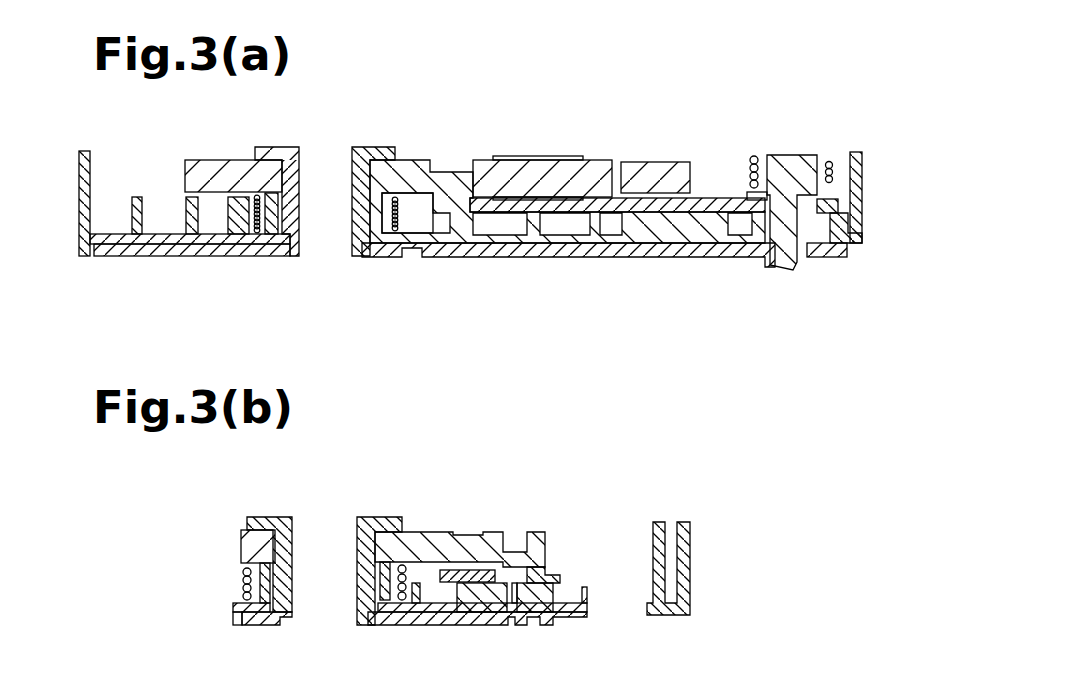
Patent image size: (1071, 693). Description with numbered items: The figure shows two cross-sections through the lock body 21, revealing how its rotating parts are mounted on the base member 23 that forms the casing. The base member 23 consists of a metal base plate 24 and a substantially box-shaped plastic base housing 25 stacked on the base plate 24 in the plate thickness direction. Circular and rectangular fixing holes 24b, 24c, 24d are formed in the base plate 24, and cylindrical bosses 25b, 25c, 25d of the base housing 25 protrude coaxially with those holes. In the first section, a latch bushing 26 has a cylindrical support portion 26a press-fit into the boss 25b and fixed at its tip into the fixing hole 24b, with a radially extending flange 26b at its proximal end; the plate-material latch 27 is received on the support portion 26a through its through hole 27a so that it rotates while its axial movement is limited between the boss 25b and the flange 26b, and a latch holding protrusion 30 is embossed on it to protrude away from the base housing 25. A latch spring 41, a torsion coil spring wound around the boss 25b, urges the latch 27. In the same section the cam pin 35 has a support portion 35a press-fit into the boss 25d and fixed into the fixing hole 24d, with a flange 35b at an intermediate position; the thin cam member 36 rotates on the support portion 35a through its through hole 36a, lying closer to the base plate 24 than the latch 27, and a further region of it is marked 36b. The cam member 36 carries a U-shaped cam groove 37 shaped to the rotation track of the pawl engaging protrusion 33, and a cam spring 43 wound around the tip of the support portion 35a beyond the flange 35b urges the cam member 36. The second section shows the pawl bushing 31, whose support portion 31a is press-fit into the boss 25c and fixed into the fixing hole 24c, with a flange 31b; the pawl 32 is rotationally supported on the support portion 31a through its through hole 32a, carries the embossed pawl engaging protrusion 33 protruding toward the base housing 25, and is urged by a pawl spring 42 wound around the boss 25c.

In FIG. 3A, the lock body 21 is at (778, 102).
In FIG. 3B, the lock body 21 is at (610, 503).
In FIG. 3A, the base member 23 is at (142, 302).
In FIG. 3B, the base member 23 is at (600, 630).
In FIG. 3A, the base plate 24 is at (133, 250).
In FIG. 3B, the base plate 24 is at (497, 617).
In FIG. 3A, the fixing hole 24b is at (289, 254).
In FIG. 3B, the fixing hole 24c is at (287, 626).
In FIG. 3A, the fixing hole 24d is at (787, 252).
In FIG. 3A, the base housing 25 is at (78, 214).
In FIG. 3B, the base housing 25 is at (547, 610).
In FIG. 3A, the boss 25b is at (266, 246).
In FIG. 3B, the boss 25c is at (266, 614).
In FIG. 3A, the boss 25d is at (822, 222).
In FIG. 3A, the latch bushing 26 is at (372, 152).
In FIG. 3A, the support portion 26a is at (300, 173).
In FIG. 3A, the flange 26b is at (265, 147).
In FIG. 3A, the latch 27 is at (212, 165).
In FIG. 3A, the through hole 27a is at (286, 165).
In FIG. 3A, the latch holding protrusion 30 is at (438, 243).
In FIG. 3B, the pawl bushing 31 is at (380, 520).
In FIG. 3B, the support portion 31a is at (292, 542).
In FIG. 3B, the flange 31b is at (265, 517).
In FIG. 3A, the pawl 32 is at (653, 166).
In FIG. 3B, the pawl 32 is at (485, 533).
In FIG. 3B, the through hole 32a is at (273, 528).
In FIG. 3B, the pawl engaging protrusion 33 is at (490, 592).
In FIG. 3A, the cam pin 35 is at (797, 160).
In FIG. 3A, the support portion 35a is at (766, 222).
In FIG. 3A, the flange 35b is at (747, 196).
In FIG. 3A, the cam member 36 is at (503, 216).
In FIG. 3B, the cam member 36 is at (475, 585).
In FIG. 3A, the through hole 36a is at (803, 210).
In FIG. 3A, the movable body raised portion 36b is at (467, 197).
In FIG. 3B, the cam groove 37 is at (541, 568).
In FIG. 3A, the latch spring 41 is at (398, 216).
In FIG. 3B, the pawl spring 42 is at (242, 576).
In FIG. 3A, the cam spring 43 is at (753, 157).